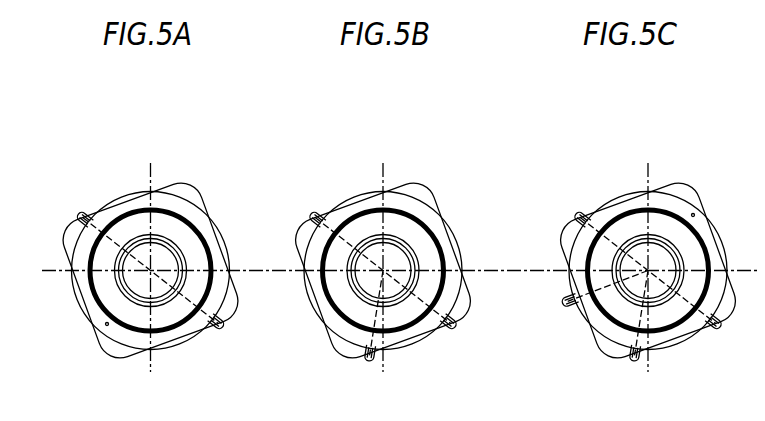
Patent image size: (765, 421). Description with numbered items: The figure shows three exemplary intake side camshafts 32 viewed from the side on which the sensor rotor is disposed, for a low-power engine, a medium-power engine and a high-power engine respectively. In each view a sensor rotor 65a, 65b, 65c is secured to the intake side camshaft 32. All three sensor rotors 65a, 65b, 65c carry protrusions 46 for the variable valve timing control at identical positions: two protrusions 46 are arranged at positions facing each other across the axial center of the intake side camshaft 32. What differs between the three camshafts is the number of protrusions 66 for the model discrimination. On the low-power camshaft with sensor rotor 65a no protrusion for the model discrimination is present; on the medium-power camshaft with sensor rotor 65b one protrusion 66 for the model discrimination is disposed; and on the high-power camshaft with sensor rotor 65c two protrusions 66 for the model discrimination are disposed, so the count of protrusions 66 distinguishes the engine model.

In FIG. 5A, the intake side camshaft 32 is at (82, 350).
In FIG. 5B, the intake side camshaft 32 is at (312, 346).
In FIG. 5C, the intake side camshaft 32 is at (525, 350).
In FIG. 5A, the protrusion for the variable valve timing control 46 is at (81, 211).
In FIG. 5B, the protrusion for the variable valve timing control 46 is at (311, 212).
In FIG. 5C, the protrusion for the variable valve timing control 46 is at (579, 211).
In FIG. 5A, the sensor rotor 65a is at (132, 199).
In FIG. 5B, the sensor rotor 65b is at (369, 197).
In FIG. 5C, the sensor rotor 65c is at (620, 199).
In FIG. 5B, the protrusion for the model discrimination 66 is at (370, 362).
In FIG. 5C, the protrusion for the model discrimination 66 is at (563, 302).